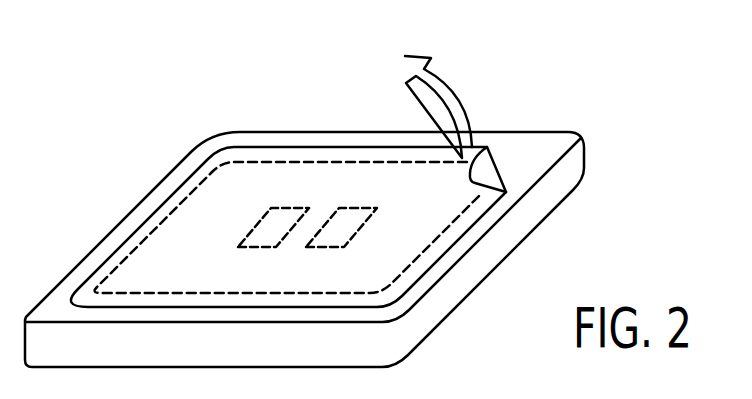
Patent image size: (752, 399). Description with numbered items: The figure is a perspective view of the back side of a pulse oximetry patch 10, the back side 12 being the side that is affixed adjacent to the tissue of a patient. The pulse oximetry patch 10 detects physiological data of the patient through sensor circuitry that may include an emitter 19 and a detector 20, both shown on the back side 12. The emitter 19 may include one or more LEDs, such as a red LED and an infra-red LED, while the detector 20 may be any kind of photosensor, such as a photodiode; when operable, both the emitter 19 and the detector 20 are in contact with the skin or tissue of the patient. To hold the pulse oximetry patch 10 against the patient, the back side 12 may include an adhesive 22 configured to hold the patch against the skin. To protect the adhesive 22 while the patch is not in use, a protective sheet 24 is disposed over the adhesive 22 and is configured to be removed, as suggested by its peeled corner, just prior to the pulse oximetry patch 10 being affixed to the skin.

The pulse oximetry patch 10 is at (332, 76).
The back side 12 is at (530, 147).
The emitter 19 is at (276, 223).
The detector 20 is at (343, 227).
The adhesive 22 is at (413, 263).
The protective sheet 24 is at (481, 210).